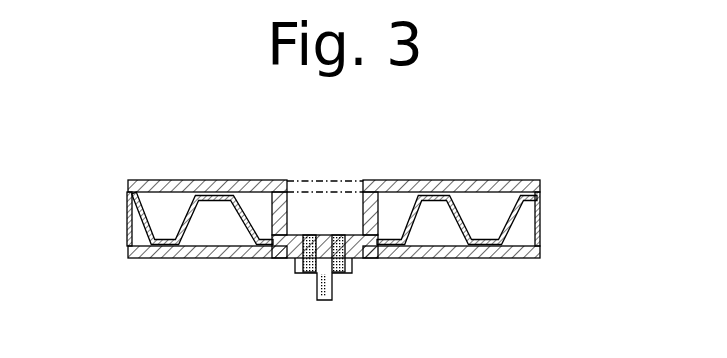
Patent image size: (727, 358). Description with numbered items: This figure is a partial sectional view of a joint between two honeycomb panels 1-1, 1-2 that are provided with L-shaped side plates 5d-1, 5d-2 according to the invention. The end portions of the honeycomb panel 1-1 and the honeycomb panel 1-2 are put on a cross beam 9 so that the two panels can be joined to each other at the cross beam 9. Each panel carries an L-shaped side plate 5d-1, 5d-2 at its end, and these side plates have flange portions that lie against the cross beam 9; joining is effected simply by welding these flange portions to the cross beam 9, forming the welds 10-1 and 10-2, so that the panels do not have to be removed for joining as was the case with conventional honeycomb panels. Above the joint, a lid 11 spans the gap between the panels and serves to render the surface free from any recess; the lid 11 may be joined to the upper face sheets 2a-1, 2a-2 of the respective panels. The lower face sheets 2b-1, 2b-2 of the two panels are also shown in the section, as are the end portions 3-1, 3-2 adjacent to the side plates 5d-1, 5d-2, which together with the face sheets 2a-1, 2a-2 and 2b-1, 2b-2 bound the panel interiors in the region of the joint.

The honeycomb panel 1-1 is at (408, 168).
The honeycomb panel 1-2 is at (276, 170).
The face sheet 2a-1 is at (480, 180).
The face sheet 2a-2 is at (217, 180).
The lower face plate of first panel 2b-1 is at (455, 259).
The lower face plate of second panel 2b-2 is at (212, 262).
The edge member of first panel 3-1 is at (540, 230).
The edge member of second panel 3-2 is at (140, 224).
The L-shaped side plate 5d-1 is at (410, 259).
The L-shaped side plate 5d-2 is at (263, 260).
The cross beam 9 is at (298, 275).
The weld 10-1 is at (352, 266).
The weld 10-2 is at (297, 272).
The lid 11 is at (327, 180).